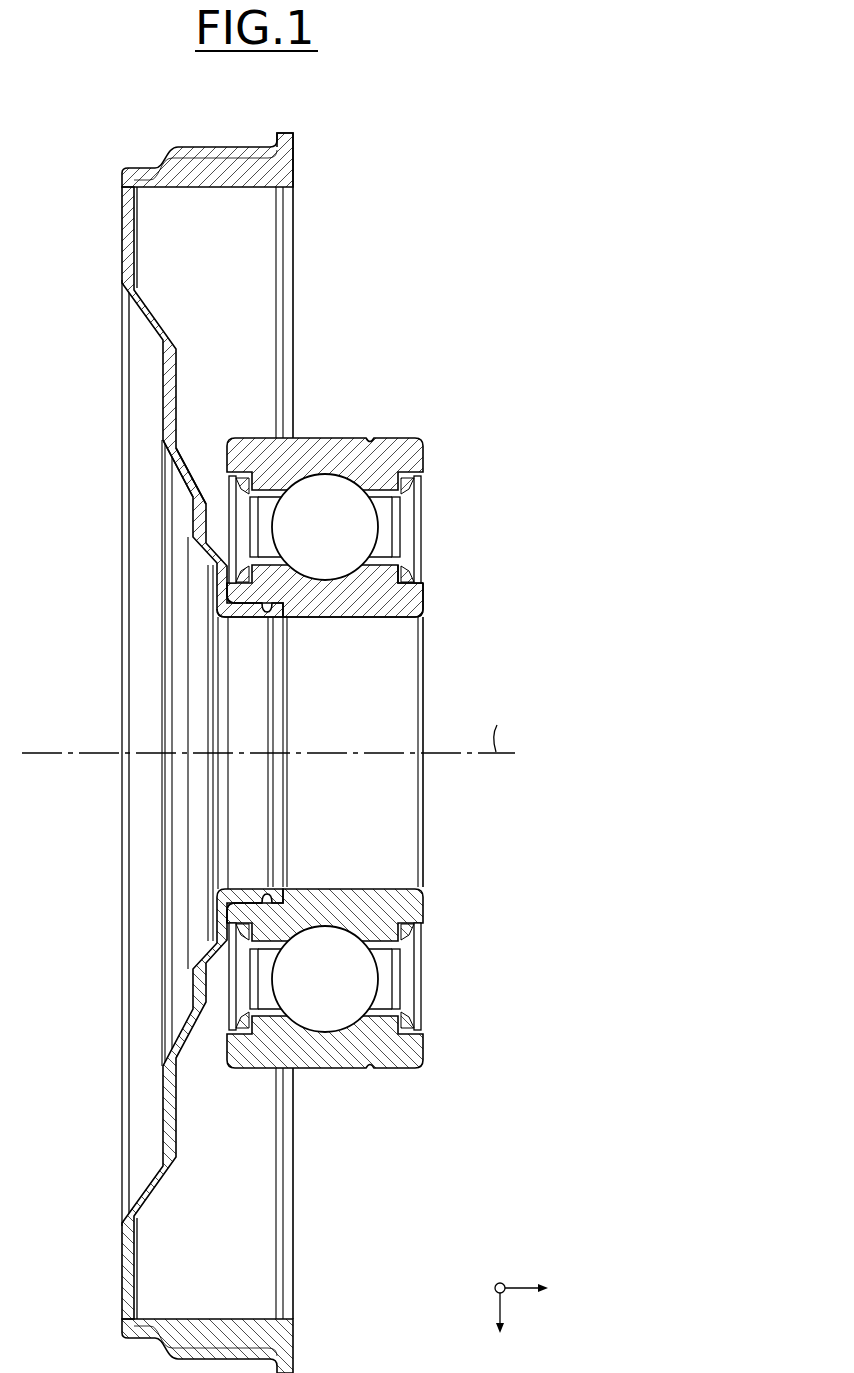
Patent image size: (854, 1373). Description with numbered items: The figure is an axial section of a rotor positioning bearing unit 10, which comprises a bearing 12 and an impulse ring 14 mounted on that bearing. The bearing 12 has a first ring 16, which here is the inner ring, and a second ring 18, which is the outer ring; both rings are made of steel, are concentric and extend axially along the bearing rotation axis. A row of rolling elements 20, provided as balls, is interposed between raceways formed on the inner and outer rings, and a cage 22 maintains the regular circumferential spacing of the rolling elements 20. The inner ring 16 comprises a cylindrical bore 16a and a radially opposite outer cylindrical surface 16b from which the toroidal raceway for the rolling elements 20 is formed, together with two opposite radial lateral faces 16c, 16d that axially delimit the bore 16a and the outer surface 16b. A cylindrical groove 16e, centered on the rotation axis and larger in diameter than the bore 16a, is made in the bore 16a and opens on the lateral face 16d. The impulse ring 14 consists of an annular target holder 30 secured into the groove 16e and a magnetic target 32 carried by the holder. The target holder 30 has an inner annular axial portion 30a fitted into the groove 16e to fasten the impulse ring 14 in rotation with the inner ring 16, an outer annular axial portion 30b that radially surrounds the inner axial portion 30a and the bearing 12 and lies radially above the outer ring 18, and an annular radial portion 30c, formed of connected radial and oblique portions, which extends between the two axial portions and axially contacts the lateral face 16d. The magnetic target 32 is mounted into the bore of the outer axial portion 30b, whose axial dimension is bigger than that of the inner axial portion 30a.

The rotor positioning bearing unit 10 is at (296, 735).
The bearing 12 is at (277, 535).
The impulse ring 14 is at (113, 263).
The first ring 16 is at (263, 898).
The bore 16a is at (358, 622).
The outer cylindrical surface 16b is at (390, 548).
The radial lateral face 16c is at (425, 598).
The radial lateral face 16d is at (232, 594).
The cylindrical groove 16e is at (230, 888).
The second ring 18 is at (426, 1052).
The rolling elements 20 is at (339, 986).
The cage 22 is at (386, 996).
The target holder 30 is at (201, 735).
The inner annular axial portion 30a is at (262, 620).
The outer annular axial portion 30b is at (236, 150).
The annular radial portion 30c is at (200, 511).
The magnetic target 32 is at (290, 176).